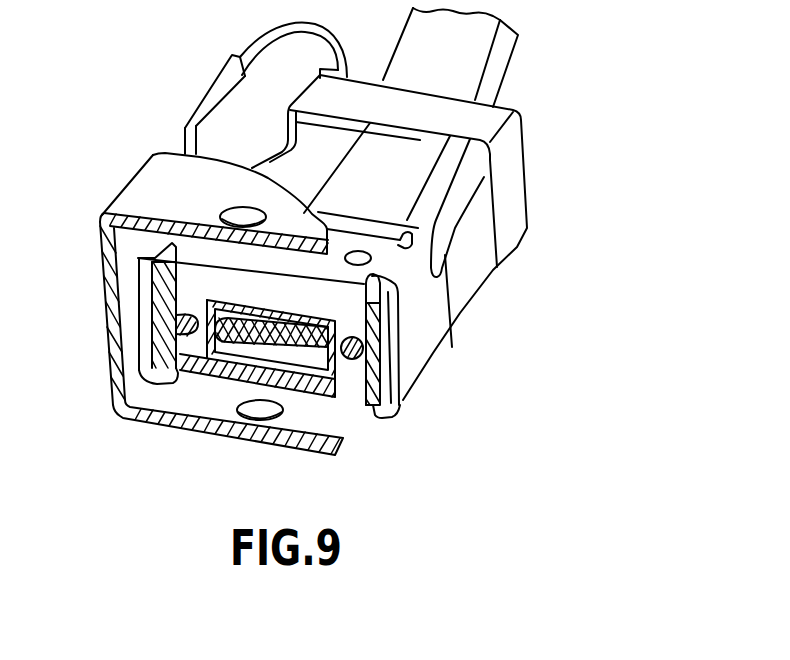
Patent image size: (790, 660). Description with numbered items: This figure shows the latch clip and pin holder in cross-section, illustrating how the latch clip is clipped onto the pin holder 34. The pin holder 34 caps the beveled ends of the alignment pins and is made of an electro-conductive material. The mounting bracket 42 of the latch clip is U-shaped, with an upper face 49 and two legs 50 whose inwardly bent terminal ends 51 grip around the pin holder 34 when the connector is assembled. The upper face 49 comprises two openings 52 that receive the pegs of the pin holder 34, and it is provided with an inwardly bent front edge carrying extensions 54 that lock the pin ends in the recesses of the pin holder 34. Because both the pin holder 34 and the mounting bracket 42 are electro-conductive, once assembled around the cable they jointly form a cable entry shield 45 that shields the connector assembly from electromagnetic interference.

The pin holder 34 is at (327, 392).
The mounting bracket 42 is at (415, 333).
The cable entry shield 45 is at (200, 372).
The upper face 49 is at (397, 260).
The legs 50 is at (415, 367).
The inwardly bent terminal ends 51 is at (380, 418).
The openings 52 is at (358, 258).
The extensions 54 is at (190, 293).